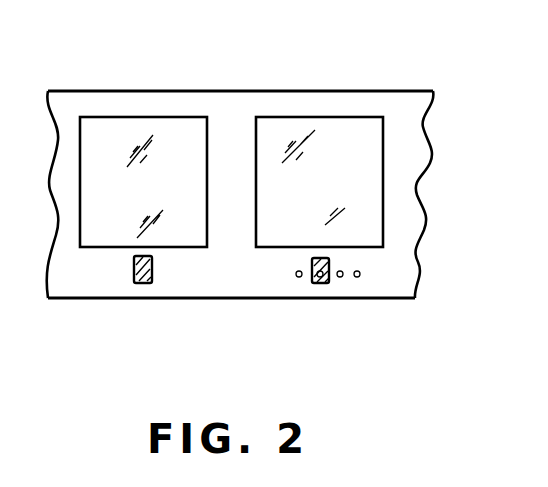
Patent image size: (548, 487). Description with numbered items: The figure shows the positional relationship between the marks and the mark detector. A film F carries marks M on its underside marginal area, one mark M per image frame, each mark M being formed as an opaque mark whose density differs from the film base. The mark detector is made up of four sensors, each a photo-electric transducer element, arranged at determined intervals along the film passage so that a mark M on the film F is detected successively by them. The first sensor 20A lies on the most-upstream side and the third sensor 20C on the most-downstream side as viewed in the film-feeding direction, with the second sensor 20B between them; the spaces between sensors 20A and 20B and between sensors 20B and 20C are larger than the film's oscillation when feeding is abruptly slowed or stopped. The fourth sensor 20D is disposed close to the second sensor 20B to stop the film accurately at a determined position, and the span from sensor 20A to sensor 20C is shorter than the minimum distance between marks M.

The film F is at (345, 91).
The mark M is at (140, 283).
The first sensor 20A is at (296, 276).
The second sensor 20B is at (320, 283).
The third sensor 20C is at (360, 274).
The fourth sensor 20D is at (342, 277).